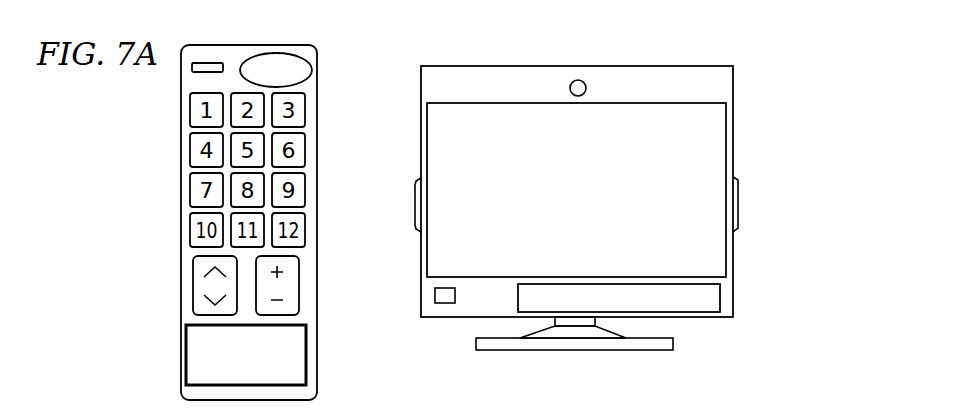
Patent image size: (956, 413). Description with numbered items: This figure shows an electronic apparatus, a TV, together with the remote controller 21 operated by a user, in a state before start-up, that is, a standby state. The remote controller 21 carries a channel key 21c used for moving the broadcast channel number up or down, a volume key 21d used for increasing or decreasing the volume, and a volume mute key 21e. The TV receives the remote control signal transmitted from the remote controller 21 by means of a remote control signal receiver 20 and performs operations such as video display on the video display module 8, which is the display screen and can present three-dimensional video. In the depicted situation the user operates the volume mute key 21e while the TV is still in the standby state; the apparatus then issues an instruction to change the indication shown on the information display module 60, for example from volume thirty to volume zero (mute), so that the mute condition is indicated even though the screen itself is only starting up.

The remote controller 21 is at (312, 69).
The channel key 21c is at (193, 282).
The volume key 21d is at (299, 278).
The volume mute key 21e is at (297, 353).
The video display module 8 is at (712, 140).
The information display module 60 is at (720, 298).
The remote control signal receiver 20 is at (440, 303).